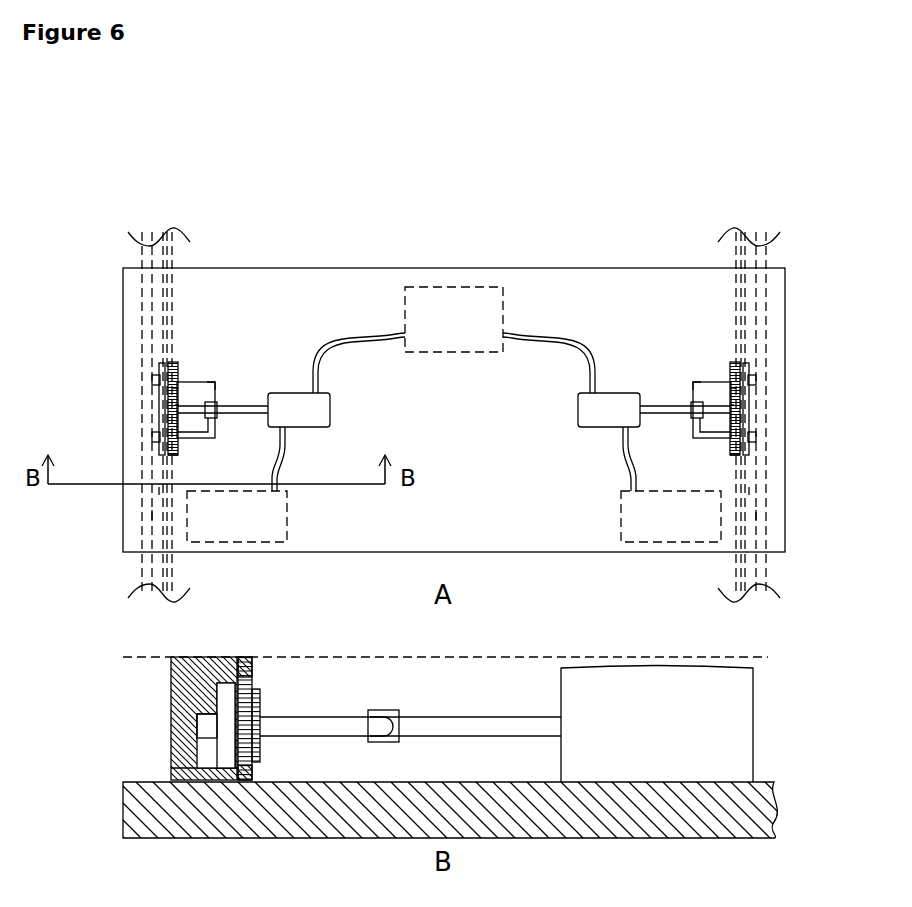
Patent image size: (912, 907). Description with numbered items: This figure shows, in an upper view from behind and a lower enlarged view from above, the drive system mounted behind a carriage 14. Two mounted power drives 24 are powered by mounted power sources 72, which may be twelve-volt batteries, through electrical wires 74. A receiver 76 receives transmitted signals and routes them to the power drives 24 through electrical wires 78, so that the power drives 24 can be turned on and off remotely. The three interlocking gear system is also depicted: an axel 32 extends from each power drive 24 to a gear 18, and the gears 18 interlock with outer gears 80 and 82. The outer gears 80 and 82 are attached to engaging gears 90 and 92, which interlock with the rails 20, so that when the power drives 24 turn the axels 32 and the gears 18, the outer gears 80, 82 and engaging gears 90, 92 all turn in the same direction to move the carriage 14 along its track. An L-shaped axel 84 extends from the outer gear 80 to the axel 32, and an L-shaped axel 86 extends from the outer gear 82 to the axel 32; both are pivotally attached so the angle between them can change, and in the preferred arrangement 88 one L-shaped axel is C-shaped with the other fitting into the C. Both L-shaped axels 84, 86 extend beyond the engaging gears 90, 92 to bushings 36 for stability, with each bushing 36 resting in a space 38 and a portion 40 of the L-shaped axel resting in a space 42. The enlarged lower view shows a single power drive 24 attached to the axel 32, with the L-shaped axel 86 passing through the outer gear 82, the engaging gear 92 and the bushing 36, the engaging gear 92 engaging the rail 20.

The carriage 14 is at (785, 283).
The gear 18 is at (176, 405).
The rail 20 is at (173, 292).
The power drive 24 is at (330, 397).
The axel 32 is at (255, 414).
The bushing 36 is at (160, 372).
The space 38 is at (158, 492).
The portion of L-shaped axel 40 is at (152, 380).
The space 42 is at (152, 516).
The power source 72 is at (287, 521).
The electrical wire 74 is at (278, 468).
The receiver 76 is at (470, 352).
The electrical wire 78 is at (380, 337).
The outer gear 80 is at (176, 447).
The outer gear 82 is at (173, 388).
The L-shaped axel 84 is at (215, 430).
The L-shaped axel 86 is at (215, 385).
The arrangement 88 is at (217, 403).
The engaging gear 90 is at (176, 457).
The engaging gear 92 is at (176, 365).